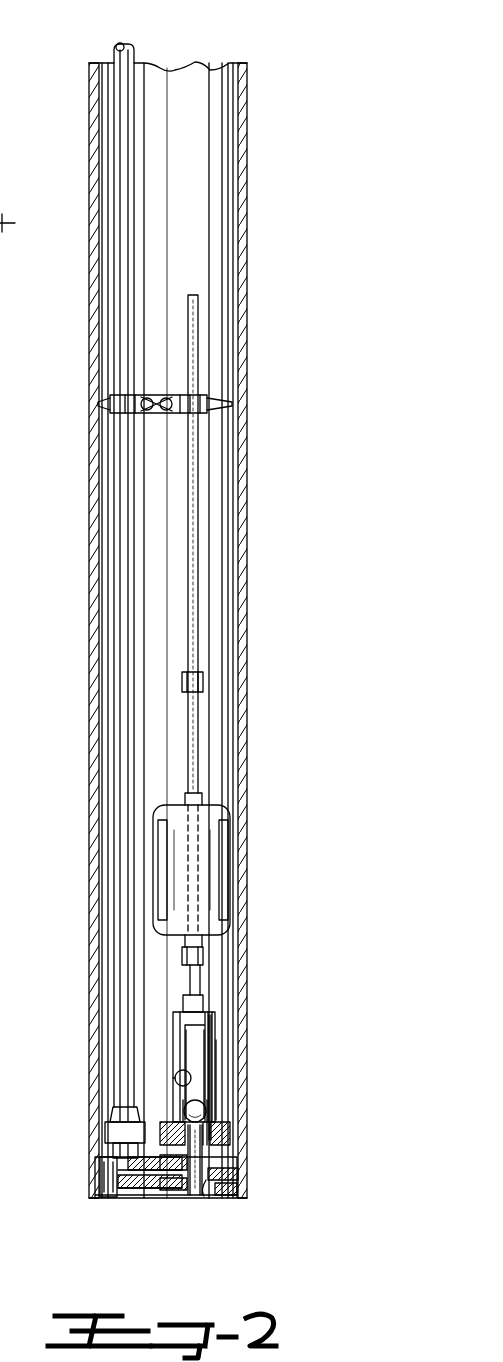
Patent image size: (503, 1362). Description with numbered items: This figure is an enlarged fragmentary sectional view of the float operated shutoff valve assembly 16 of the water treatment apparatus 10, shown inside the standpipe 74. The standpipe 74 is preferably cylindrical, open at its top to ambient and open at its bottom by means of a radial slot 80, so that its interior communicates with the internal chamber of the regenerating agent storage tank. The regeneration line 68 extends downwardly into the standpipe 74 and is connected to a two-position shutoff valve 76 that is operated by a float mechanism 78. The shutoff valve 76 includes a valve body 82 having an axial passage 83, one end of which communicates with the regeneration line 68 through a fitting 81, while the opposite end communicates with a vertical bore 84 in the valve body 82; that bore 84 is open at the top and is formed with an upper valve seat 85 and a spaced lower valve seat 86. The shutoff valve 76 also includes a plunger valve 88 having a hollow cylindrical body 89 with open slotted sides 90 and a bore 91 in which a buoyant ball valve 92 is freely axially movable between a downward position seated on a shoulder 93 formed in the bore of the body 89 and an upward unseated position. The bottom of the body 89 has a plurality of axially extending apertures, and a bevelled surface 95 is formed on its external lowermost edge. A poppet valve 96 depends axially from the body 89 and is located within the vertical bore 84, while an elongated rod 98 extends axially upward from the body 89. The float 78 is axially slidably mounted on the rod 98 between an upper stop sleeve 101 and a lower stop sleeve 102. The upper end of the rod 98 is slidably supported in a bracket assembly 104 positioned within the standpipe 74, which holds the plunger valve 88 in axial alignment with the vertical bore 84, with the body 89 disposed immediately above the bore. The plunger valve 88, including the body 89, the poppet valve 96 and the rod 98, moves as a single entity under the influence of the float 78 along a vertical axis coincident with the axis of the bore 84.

The water treatment apparatus 10 is at (11, 359).
The float operated shutoff valve assembly 16 is at (222, 949).
The regeneration line 68 is at (134, 47).
The standpipe 74 is at (247, 141).
The two-position shutoff valve 76 is at (225, 1085).
The float mechanism 78 is at (230, 816).
The radial slot 80 is at (103, 1150).
The fitting 81 is at (110, 1125).
The valve body 82 is at (163, 1198).
The axial passage 83 is at (135, 1198).
The vertical bore 84 is at (190, 1198).
The upper valve seat 85 is at (186, 1130).
The lower valve seat 86 is at (226, 1138).
The plunger valve 88 is at (215, 1012).
The hollow cylindrical body 89 is at (222, 1023).
The slotted sides 90 is at (205, 1056).
The bore 91 is at (181, 1069).
The buoyant ball valve 92 is at (218, 1110).
The shoulder 93 is at (183, 1105).
The bevelled surface 95 is at (215, 1142).
The poppet valve 96 is at (218, 1198).
The elongated rod 98 is at (198, 556).
The upper stop sleeve 101 is at (203, 681).
The lower stop sleeve 102 is at (205, 960).
The bracket assembly 104 is at (195, 398).